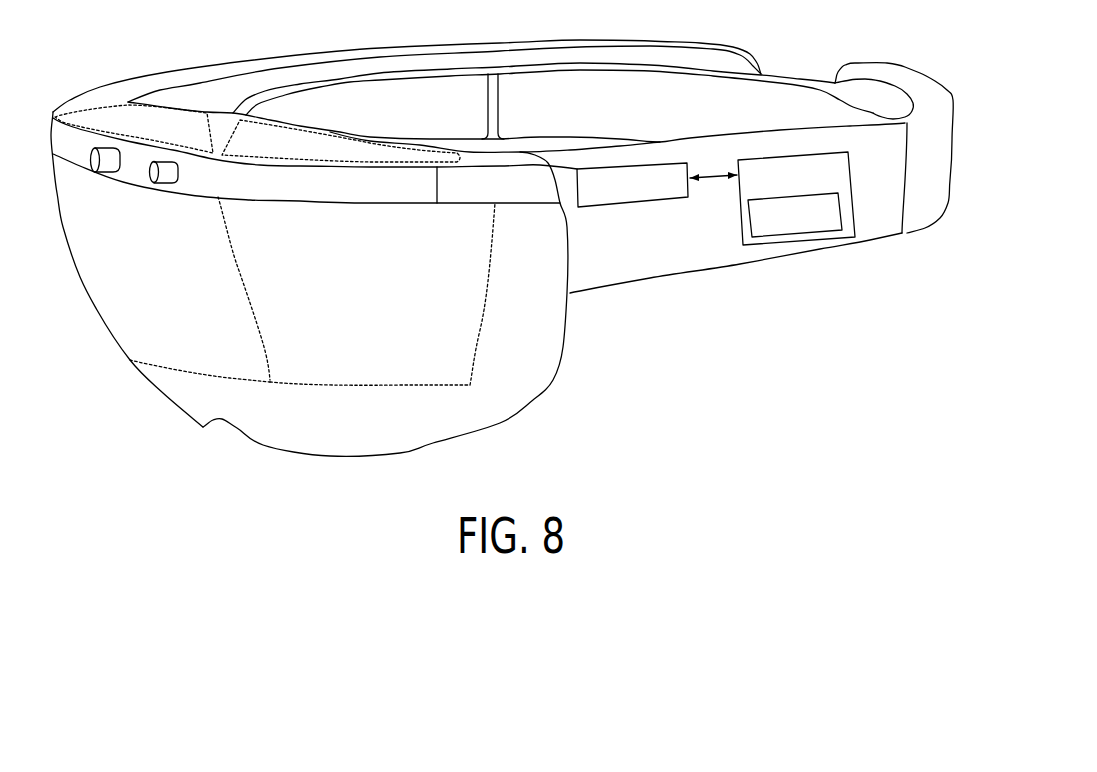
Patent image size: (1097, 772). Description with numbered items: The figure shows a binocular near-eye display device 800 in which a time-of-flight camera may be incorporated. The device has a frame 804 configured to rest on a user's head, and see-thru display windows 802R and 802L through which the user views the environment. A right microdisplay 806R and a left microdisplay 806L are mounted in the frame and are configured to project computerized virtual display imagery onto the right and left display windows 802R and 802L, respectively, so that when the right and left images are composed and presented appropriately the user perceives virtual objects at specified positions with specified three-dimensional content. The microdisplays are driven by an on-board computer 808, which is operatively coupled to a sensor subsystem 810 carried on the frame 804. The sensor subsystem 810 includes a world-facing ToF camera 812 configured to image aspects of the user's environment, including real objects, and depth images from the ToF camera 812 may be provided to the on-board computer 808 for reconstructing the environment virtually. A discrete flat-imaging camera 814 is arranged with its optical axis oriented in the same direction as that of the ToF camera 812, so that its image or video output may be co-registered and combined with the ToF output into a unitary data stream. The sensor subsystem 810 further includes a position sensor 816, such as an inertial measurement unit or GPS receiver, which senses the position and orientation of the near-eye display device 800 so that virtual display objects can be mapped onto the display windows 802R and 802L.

The near-eye display device 800 is at (108, 49).
The right see-thru display window 802R is at (235, 363).
The left see-thru display window 802L is at (458, 373).
The frame 804 is at (693, 262).
The right microdisplay 806R is at (193, 138).
The left microdisplay 806L is at (300, 155).
The on-board computer 808 is at (647, 193).
The sensor subsystem 810 is at (812, 189).
The world-facing ToF camera 812 is at (109, 178).
The flat-imaging camera 814 is at (168, 182).
The position sensor 816 is at (812, 226).